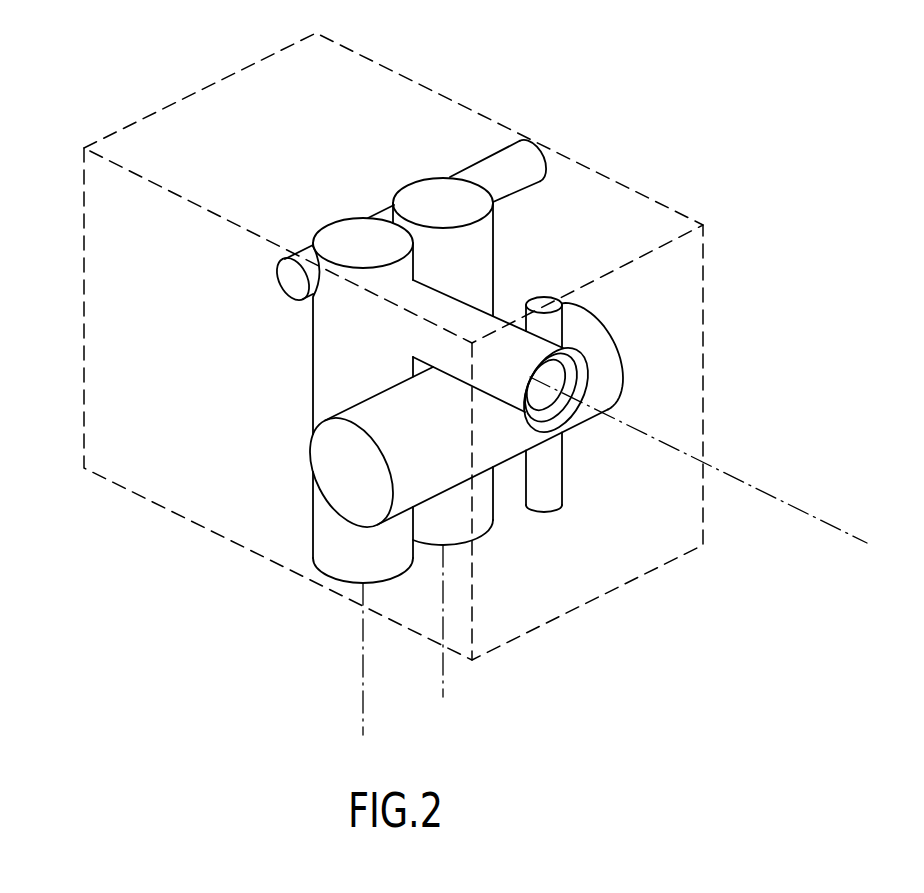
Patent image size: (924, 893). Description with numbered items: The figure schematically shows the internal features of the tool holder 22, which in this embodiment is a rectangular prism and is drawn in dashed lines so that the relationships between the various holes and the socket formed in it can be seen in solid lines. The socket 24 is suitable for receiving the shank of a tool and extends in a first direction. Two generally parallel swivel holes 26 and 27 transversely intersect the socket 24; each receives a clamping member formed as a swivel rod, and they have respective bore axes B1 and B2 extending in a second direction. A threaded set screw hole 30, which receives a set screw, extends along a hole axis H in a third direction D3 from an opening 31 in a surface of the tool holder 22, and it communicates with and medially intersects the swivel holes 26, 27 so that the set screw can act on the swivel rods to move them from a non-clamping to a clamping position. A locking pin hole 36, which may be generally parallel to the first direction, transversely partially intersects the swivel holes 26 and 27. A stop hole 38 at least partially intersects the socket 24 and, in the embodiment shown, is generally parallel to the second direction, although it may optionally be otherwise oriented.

The tool holder 22 is at (202, 363).
The socket 24 is at (602, 350).
The swivel hole 26 is at (355, 233).
The swivel hole 27 is at (429, 196).
The set screw hole 30 is at (592, 397).
The opening 31 is at (580, 415).
The locking pin hole 36 is at (517, 166).
The stop hole 38 is at (537, 303).
The bore axis B1 is at (363, 657).
The bore axis B2 is at (443, 620).
The third direction D3 is at (720, 472).
The hole axis H is at (813, 513).